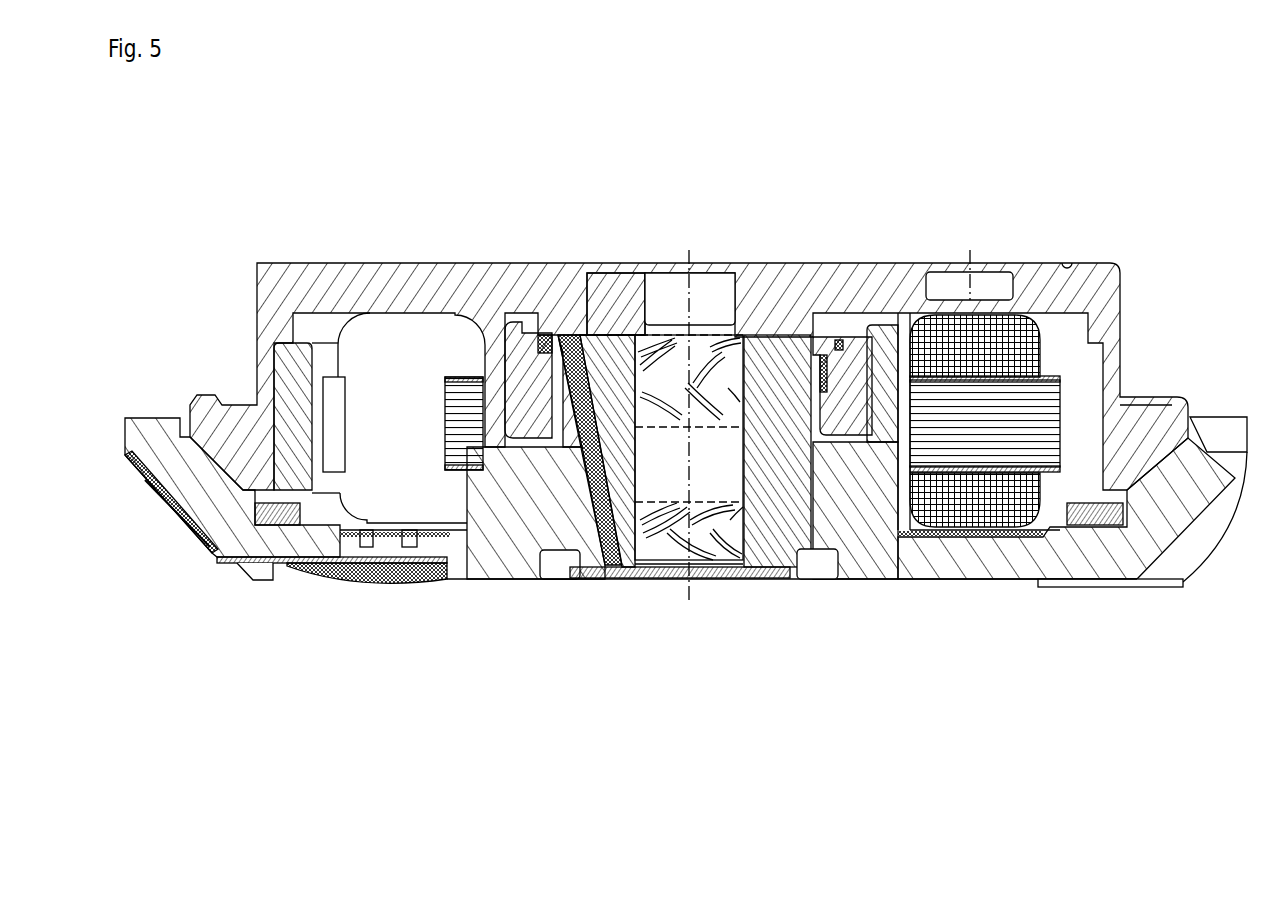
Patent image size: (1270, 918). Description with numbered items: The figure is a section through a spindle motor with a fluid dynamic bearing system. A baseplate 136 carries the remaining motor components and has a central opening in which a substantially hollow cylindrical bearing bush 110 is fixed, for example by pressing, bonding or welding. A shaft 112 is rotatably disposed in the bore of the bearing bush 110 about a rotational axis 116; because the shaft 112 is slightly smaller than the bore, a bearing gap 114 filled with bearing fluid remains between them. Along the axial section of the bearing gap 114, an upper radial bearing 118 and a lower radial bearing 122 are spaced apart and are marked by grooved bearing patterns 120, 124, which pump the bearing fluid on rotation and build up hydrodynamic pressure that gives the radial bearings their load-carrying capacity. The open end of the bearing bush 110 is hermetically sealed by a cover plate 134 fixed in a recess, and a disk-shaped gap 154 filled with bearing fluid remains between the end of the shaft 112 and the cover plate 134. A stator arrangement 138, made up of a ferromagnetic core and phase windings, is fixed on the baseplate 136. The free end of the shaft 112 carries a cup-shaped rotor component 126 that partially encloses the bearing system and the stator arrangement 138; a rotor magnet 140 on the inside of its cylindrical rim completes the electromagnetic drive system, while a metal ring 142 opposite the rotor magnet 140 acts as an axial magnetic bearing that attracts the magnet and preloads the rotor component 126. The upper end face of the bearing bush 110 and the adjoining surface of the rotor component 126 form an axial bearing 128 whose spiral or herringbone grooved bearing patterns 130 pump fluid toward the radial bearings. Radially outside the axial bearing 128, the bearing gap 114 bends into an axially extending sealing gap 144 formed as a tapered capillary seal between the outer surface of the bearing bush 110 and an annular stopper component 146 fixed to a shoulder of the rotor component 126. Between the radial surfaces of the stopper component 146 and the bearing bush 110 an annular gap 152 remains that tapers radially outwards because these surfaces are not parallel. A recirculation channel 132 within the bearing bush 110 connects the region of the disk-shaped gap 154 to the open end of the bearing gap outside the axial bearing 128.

The bearing bush 110 is at (580, 472).
The shaft 112 is at (678, 527).
The bearing gap 114 is at (800, 350).
The rotational axis 116 is at (690, 257).
The upper radial bearing 118 is at (605, 342).
The grooved bearing pattern 120 is at (672, 363).
The lower radial bearing 122 is at (700, 533).
The grooved bearing pattern 124 is at (620, 580).
The rotor component 126 is at (556, 352).
The axial bearing 128 is at (632, 338).
The grooved bearing patterns 130 is at (765, 385).
The recirculation channel 132 is at (518, 368).
The cover plate 134 is at (605, 568).
The baseplate 136 is at (290, 543).
The stator arrangement 138 is at (925, 430).
The rotor magnet 140 is at (283, 340).
The metal ring 142 is at (1100, 520).
The sealing gap 144 is at (822, 402).
The stopper component 146 is at (470, 350).
The annular gap 152 is at (832, 340).
The disk-shaped gap 154 is at (745, 567).